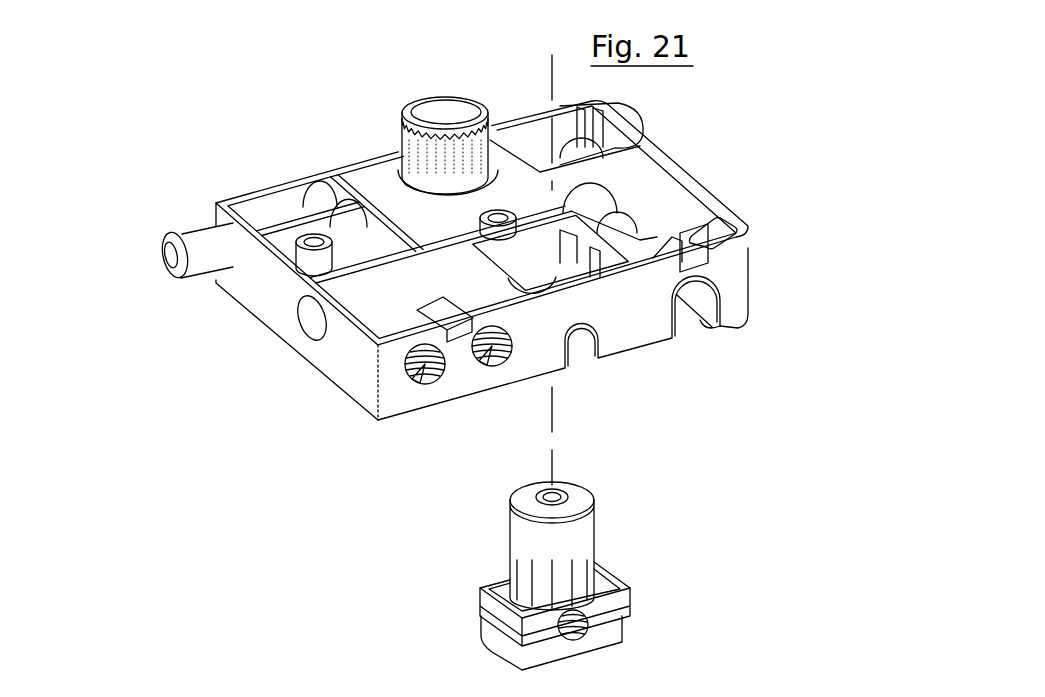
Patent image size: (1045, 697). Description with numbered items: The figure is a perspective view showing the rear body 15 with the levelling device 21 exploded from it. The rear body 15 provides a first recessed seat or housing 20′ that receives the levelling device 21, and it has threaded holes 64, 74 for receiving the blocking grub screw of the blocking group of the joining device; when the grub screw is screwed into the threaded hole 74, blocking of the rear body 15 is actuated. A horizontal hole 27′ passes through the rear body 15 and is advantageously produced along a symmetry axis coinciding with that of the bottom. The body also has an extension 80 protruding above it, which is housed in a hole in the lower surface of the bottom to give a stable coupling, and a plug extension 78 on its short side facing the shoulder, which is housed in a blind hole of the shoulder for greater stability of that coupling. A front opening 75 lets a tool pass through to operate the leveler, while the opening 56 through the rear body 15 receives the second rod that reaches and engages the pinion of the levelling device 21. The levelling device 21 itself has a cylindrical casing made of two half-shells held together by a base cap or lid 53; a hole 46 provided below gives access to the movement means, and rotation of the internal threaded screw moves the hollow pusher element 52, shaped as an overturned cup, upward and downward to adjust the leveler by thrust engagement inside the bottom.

The rear body 15 is at (215, 335).
The plug extension 78 is at (203, 235).
The horizontal hole 27′ is at (308, 332).
The threaded hole 64 is at (413, 370).
The threaded hole 74 is at (495, 353).
The front opening 75 is at (573, 357).
The opening 56 is at (740, 328).
The extension 80 is at (423, 112).
The first recessed seat or housing 20′ is at (593, 152).
The levelling device 21 is at (558, 557).
The hollow pusher element 52 is at (585, 542).
The base cap or lid 53 is at (481, 627).
The hole 46 is at (598, 645).